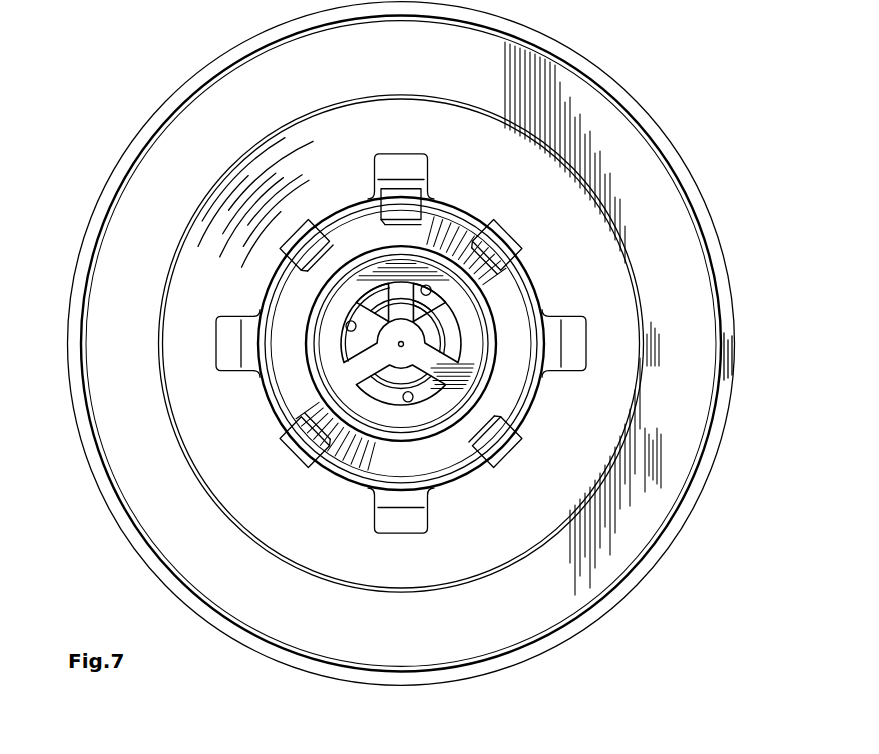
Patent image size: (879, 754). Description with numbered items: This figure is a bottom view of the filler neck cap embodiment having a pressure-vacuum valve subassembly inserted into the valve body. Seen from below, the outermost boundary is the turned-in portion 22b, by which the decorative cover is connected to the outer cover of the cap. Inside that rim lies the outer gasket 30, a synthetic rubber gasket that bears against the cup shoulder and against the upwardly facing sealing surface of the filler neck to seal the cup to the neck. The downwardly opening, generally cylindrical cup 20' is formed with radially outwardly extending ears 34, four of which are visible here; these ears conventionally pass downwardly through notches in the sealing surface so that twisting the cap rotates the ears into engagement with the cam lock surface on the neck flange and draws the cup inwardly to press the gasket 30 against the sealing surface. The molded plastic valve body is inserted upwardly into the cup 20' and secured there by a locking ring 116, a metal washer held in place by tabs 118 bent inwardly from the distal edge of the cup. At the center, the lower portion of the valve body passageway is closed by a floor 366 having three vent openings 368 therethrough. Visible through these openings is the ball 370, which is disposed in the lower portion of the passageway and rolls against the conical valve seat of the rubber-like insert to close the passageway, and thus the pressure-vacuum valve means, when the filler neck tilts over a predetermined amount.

The turned-in portion 22b is at (677, 165).
The outer gasket 30 is at (543, 183).
The locking ring 116 is at (451, 457).
The ears 34 is at (228, 340).
The tabs 118 is at (300, 245).
The cup 20' is at (455, 343).
The vent openings 368 is at (432, 288).
The ball 370 is at (433, 336).
The floor 366 is at (401, 347).